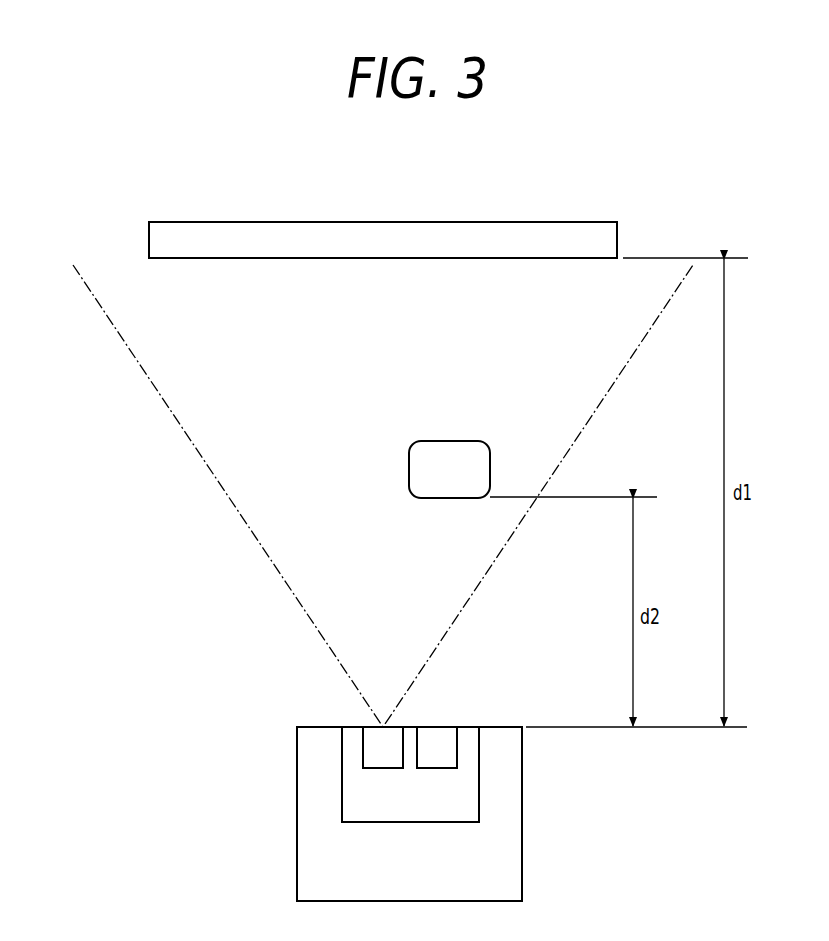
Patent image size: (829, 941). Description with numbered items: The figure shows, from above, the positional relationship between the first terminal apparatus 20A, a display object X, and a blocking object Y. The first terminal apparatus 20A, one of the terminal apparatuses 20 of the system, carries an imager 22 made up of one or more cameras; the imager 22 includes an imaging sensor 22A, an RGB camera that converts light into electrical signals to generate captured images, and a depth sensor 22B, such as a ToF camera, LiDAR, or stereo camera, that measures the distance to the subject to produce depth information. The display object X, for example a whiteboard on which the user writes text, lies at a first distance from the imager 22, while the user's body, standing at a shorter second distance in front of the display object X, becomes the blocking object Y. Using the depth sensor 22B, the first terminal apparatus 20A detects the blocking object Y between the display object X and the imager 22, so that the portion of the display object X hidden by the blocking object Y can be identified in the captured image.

The display object X is at (563, 240).
The blocking object Y is at (450, 455).
The terminal apparatus 20 is at (484, 814).
The first terminal apparatus 20A is at (419, 863).
The imager 22 is at (389, 797).
The imaging sensor 22A is at (382, 748).
The depth sensor 22B is at (440, 748).